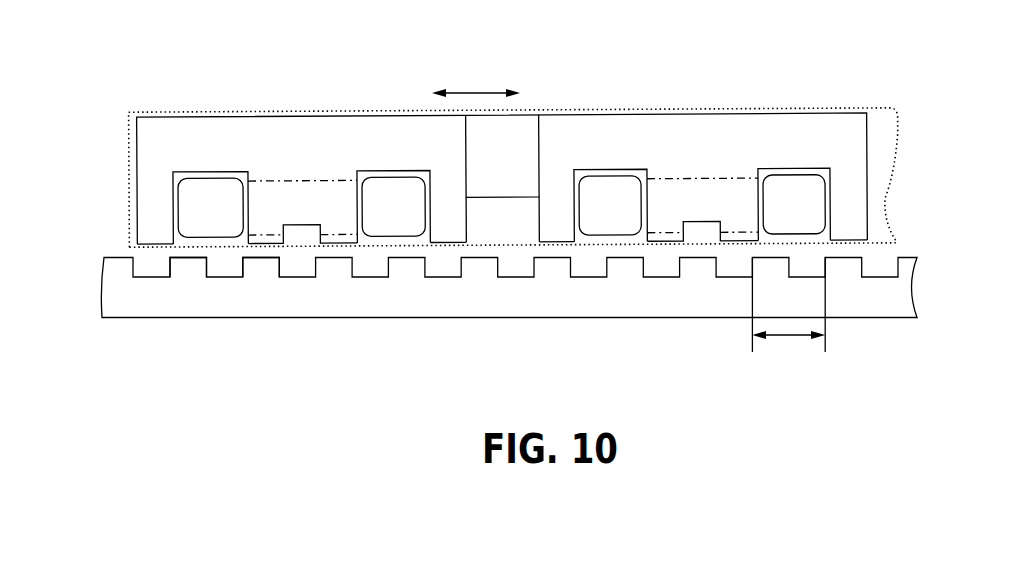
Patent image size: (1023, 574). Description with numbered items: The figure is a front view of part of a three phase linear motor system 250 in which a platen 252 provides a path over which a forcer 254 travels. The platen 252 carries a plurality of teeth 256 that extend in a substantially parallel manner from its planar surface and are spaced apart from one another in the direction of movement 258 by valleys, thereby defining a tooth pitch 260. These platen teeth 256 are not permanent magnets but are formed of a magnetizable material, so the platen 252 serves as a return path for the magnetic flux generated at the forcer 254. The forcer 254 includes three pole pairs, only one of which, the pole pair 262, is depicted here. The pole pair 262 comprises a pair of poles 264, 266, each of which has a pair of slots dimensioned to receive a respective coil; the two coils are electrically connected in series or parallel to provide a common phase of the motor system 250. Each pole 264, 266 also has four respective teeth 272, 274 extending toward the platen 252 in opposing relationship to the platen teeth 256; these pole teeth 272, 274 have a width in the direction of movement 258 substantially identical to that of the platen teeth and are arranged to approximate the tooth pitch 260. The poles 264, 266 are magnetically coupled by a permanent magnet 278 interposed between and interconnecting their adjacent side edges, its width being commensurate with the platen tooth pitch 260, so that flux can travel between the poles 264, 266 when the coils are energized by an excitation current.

The three phase linear motor system 250 is at (870, 70).
The platen 252 is at (905, 147).
The forcer 254 is at (515, 306).
The teeth 256 is at (253, 258).
The direction of movement 258 is at (465, 93).
The tooth pitch 260 is at (788, 336).
The pole pair 262 is at (612, 110).
The pole 264 is at (316, 160).
The pole 266 is at (724, 160).
The teeth 272 is at (148, 245).
The teeth 274 is at (548, 234).
The permanent magnet 278 is at (528, 125).